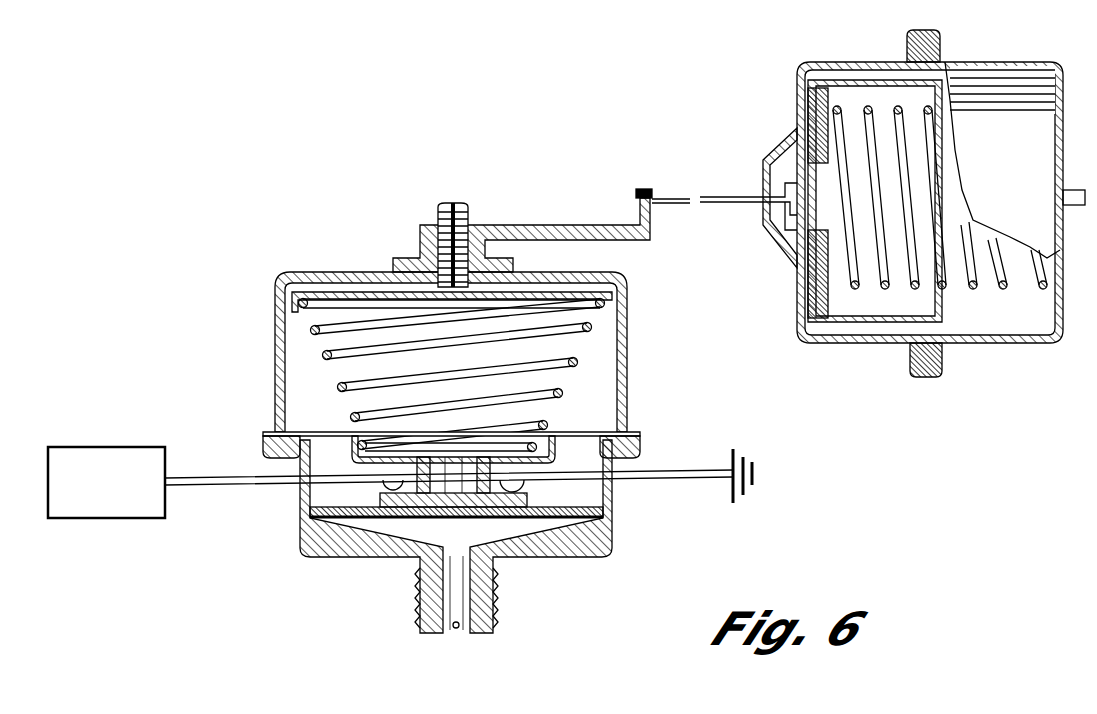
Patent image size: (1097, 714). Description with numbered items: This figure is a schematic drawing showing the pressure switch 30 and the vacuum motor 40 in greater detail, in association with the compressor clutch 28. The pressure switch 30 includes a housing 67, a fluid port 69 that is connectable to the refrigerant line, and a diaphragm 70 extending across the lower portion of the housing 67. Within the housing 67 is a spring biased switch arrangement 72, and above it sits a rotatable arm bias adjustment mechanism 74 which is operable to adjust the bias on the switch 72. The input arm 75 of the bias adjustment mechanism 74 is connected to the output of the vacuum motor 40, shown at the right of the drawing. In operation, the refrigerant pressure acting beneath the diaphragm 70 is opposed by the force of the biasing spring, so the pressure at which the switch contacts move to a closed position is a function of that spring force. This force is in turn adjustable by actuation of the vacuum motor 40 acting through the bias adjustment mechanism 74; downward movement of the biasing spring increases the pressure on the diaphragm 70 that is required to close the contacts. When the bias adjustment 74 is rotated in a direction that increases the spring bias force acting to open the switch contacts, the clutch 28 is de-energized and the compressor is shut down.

The clutch 28 is at (137, 447).
The pressure switch 30 is at (325, 258).
The vacuum motor 40 is at (802, 61).
The housing 67 is at (276, 346).
The fluid port 69 is at (462, 624).
The diaphragm 70 is at (300, 498).
The spring biased switch arrangement 72 is at (574, 411).
The bias adjustment mechanism 74 is at (514, 216).
The input arm 75 is at (579, 226).